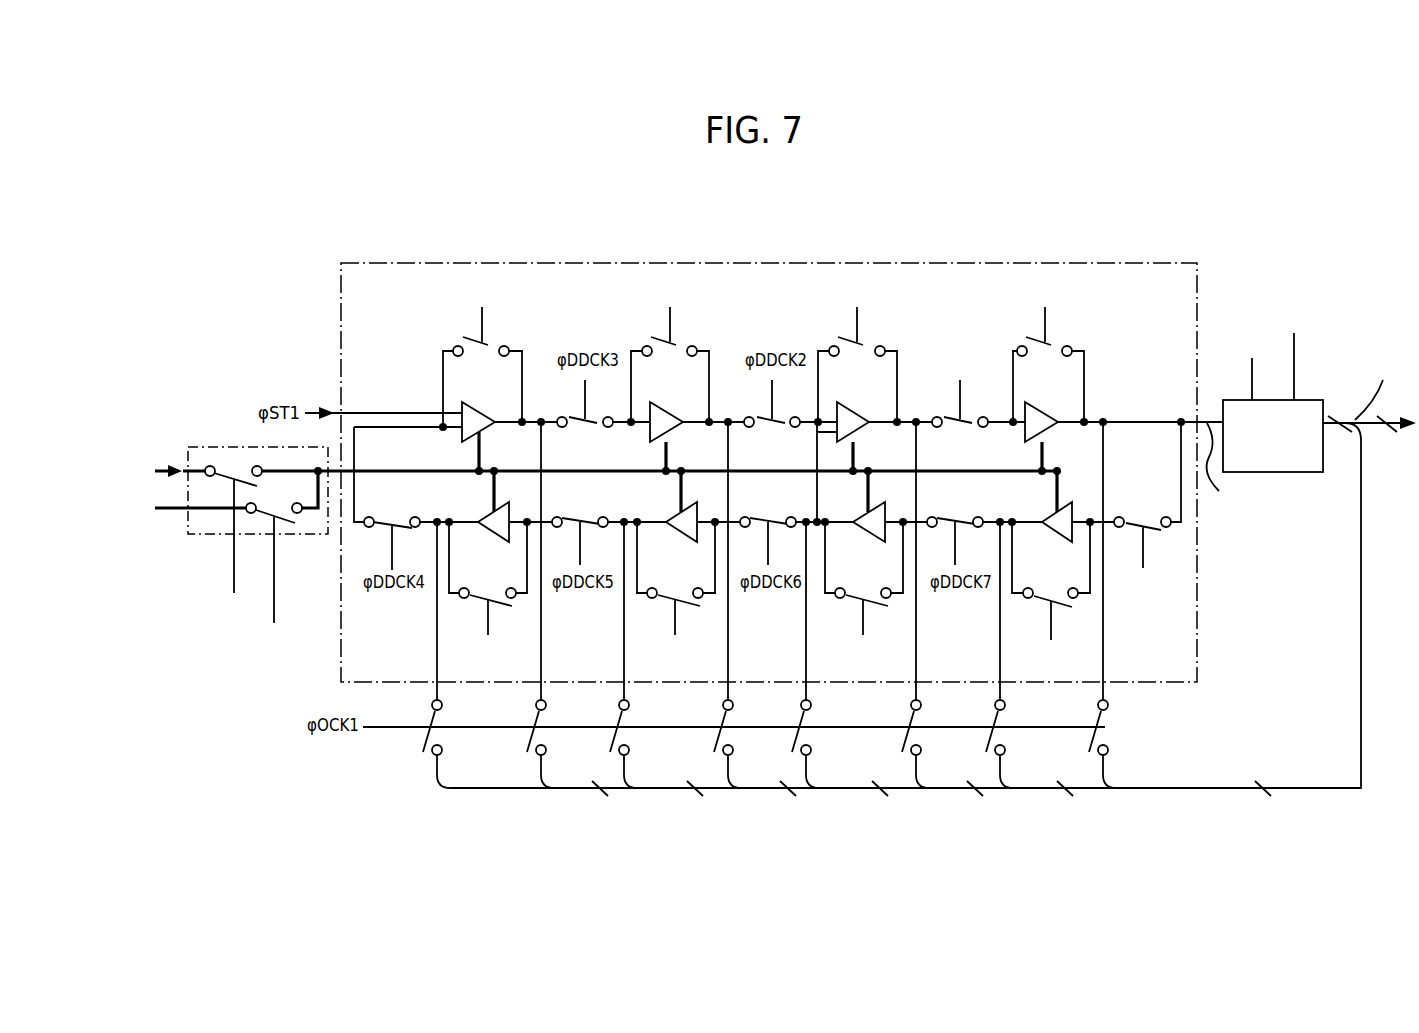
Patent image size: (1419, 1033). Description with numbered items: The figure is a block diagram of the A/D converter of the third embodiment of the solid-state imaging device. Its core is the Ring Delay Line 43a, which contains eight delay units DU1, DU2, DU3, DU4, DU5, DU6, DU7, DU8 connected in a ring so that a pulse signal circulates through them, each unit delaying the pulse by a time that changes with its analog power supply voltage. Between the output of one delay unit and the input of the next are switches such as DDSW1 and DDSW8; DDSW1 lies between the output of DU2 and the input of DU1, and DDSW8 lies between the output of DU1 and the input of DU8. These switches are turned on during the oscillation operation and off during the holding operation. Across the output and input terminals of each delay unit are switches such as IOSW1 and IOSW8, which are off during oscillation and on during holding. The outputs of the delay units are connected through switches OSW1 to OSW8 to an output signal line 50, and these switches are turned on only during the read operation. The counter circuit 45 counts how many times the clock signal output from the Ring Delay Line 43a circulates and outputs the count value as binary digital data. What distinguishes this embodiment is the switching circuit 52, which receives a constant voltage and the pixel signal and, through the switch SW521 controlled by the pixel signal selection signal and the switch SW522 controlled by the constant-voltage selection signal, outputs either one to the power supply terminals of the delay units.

The Ring Delay Line 43a is at (1153, 262).
The counter circuit 45 is at (1306, 474).
The output signal line 50 is at (1362, 625).
The switching circuit 52 is at (217, 506).
The switch SW521 is at (232, 468).
The switch SW522 is at (283, 525).
The delay unit DU1 is at (1052, 368).
The delay unit DU2 is at (855, 431).
The delay unit DU3 is at (668, 431).
The delay unit DU4 is at (480, 431).
The delay unit DU5 is at (490, 514).
The delay unit DU6 is at (677, 514).
The delay unit DU7 is at (865, 514).
The delay unit DU8 is at (1047, 579).
The switch IOSW1 is at (1046, 357).
The switch IOSW8 is at (1047, 591).
The switch DDSW1 is at (948, 428).
The switch DDSW8 is at (1131, 517).
The switch OSW1 is at (1105, 738).
The switch OSW8 is at (1002, 738).